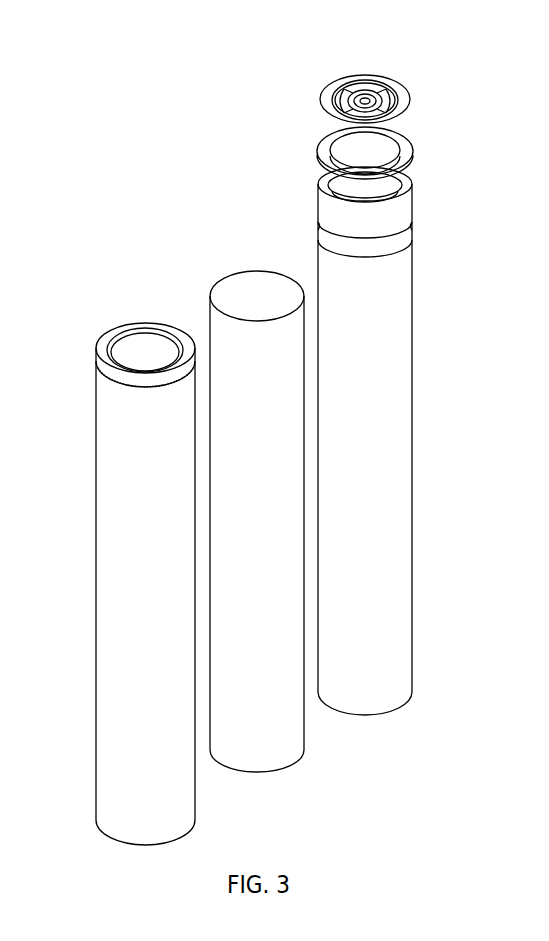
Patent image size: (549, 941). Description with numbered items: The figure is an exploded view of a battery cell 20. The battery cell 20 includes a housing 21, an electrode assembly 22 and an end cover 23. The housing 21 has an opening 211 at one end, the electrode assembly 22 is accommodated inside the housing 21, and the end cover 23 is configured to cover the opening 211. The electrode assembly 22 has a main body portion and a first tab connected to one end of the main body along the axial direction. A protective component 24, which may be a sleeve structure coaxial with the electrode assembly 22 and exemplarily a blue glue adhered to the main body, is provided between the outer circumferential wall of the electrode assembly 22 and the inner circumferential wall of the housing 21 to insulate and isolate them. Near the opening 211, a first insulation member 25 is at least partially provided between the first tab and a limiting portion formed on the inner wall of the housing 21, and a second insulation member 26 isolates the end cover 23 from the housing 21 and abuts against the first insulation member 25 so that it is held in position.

The battery cell 20 is at (250, 37).
The housing 21 is at (107, 510).
The opening 211 is at (138, 350).
The electrode assembly 22 is at (397, 423).
The end cover 23 is at (327, 106).
The protective component 24 is at (274, 743).
The first insulation member 25 is at (323, 208).
The second insulation member 26 is at (327, 152).